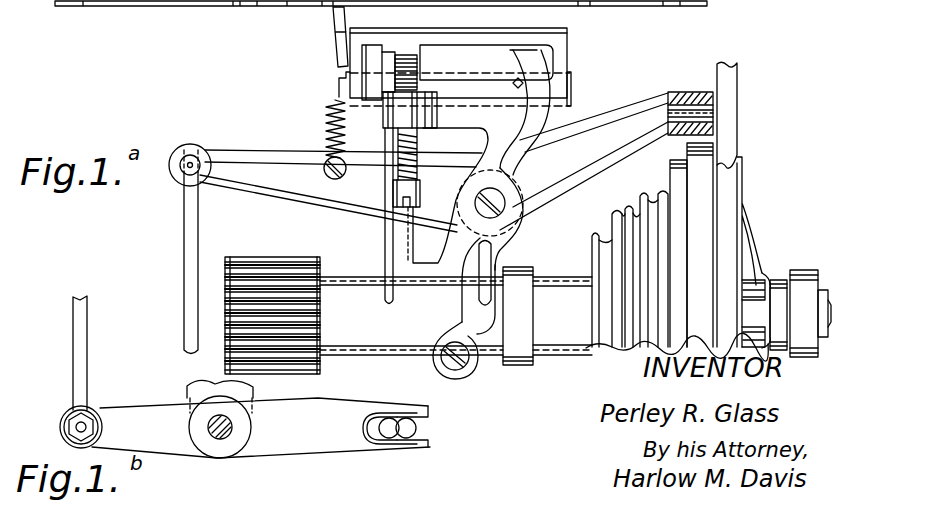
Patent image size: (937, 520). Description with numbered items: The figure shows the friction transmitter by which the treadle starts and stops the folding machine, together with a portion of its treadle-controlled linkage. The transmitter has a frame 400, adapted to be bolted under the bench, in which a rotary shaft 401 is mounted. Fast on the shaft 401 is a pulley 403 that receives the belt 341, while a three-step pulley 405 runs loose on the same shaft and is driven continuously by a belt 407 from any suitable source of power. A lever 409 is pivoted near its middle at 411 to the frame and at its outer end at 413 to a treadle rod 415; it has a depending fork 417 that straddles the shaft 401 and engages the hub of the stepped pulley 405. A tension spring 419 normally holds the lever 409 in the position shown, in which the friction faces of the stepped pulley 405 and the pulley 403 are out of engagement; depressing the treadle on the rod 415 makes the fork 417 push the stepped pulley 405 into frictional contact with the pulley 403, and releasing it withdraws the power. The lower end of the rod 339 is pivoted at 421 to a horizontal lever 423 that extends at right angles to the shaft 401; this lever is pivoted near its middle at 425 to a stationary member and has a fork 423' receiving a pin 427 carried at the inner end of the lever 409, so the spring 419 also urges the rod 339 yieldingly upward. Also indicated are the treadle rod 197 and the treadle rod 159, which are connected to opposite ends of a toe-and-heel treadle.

In FIG. 1A, the treadle rod 159 is at (333, 12).
In FIG. 1A, the treadle rod 197 is at (338, 43).
In FIG. 1B, the rod 339 is at (79, 338).
In FIG. 1A, the belt 341 is at (725, 118).
In FIG. 1A, the frame 400 is at (524, 140).
In FIG. 1A, the rotary shaft 401 is at (472, 333).
In FIG. 1A, the pulley 403 is at (742, 173).
In FIG. 1A, the three-step pulley 405 is at (581, 337).
In FIG. 1A, the belt 407 is at (632, 214).
In FIG. 1A, the lever 409 is at (233, 163).
In FIG. 1A, the pivot 411 is at (496, 201).
In FIG. 1A, the pivot 413 is at (189, 160).
In FIG. 1A, the treadle rod 415 is at (192, 230).
In FIG. 1A, the fork 417 is at (494, 342).
In FIG. 1A, the tension spring 419 is at (326, 121).
In FIG. 1B, the pivot 421 is at (79, 423).
In FIG. 1B, the horizontal lever 423 is at (261, 444).
In FIG. 1A, the fork 423' is at (684, 93).
In FIG. 1B, the fork 423' is at (406, 445).
In FIG. 1B, the pivot 425 is at (213, 420).
In FIG. 1A, the pin 427 is at (693, 113).
In FIG. 1B, the pin 427 is at (397, 433).